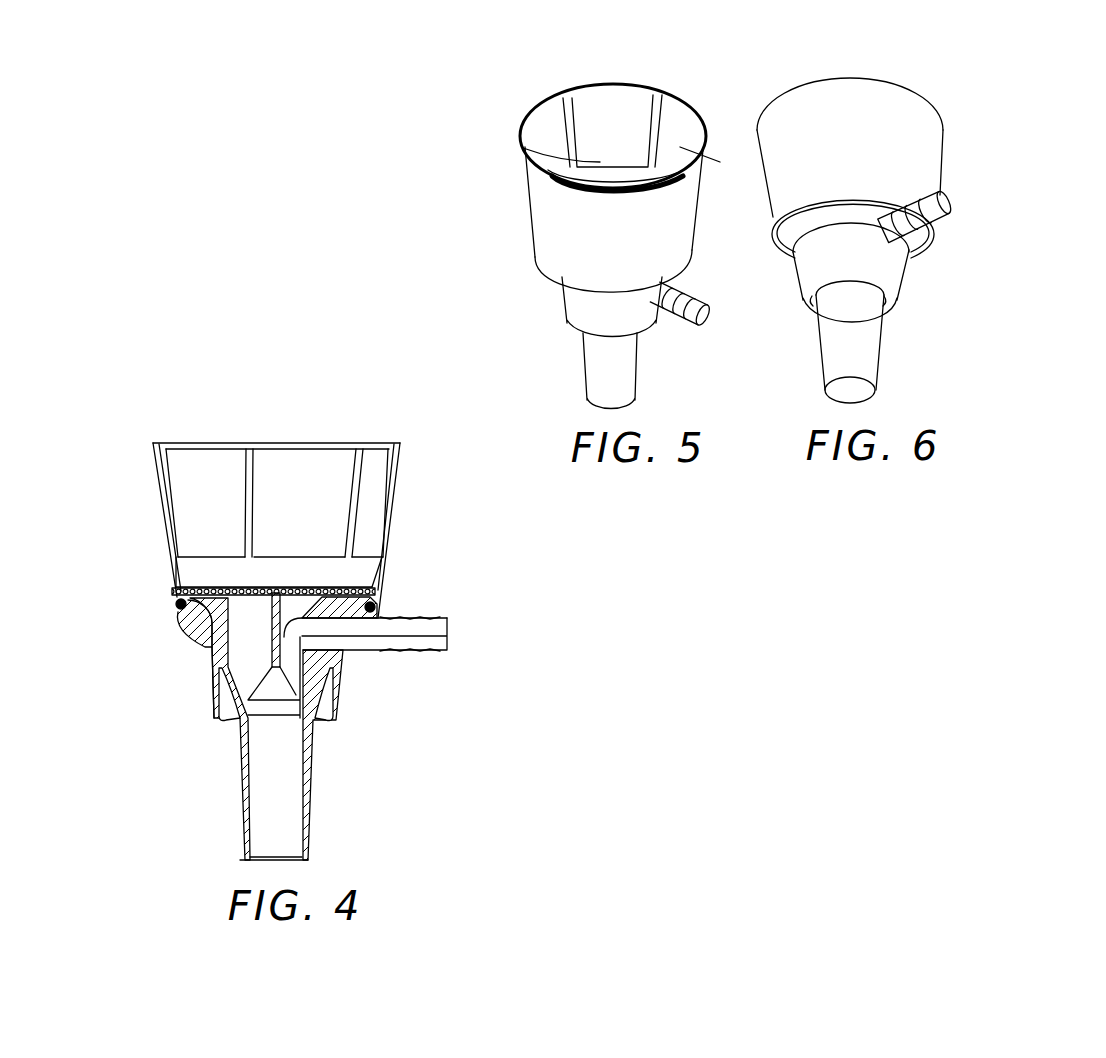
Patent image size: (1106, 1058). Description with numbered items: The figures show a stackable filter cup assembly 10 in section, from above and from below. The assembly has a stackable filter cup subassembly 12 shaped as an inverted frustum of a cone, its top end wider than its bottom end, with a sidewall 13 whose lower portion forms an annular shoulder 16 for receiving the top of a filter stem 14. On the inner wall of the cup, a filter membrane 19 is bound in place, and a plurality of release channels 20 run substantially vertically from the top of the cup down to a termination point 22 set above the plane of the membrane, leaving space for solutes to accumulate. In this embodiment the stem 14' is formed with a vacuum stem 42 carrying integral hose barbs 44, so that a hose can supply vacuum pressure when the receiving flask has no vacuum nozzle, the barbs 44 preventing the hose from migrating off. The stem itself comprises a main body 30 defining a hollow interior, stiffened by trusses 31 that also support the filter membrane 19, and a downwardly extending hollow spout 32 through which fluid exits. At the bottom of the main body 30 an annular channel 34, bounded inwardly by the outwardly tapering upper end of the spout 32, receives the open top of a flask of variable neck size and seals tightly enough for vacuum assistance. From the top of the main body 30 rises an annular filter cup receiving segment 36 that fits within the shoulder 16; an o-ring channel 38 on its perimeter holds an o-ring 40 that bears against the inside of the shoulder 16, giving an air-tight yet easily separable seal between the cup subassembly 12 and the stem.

In FIG. 4, the stackable filter cup assembly 10 is at (417, 387).
In FIG. 5, the stackable filter cup assembly 10 is at (707, 97).
In FIG. 6, the stackable filter cup assembly 10 is at (782, 90).
In FIG. 4, the stackable filter cup subassembly 12 is at (150, 465).
In FIG. 5, the stackable filter cup subassembly 12 is at (530, 213).
In FIG. 6, the stackable filter cup subassembly 12 is at (946, 135).
In FIG. 4, the housing wall 13 is at (397, 493).
In FIG. 5, the housing wall 13 is at (537, 240).
In FIG. 6, the housing wall 13 is at (867, 102).
In FIG. 5, the filter stem 14 is at (547, 367).
In FIG. 4, the lower portion 14' is at (135, 697).
In FIG. 6, the lower portion 14' is at (967, 324).
In FIG. 4, the annular shoulder 16 is at (174, 598).
In FIG. 6, the annular shoulder 16 is at (920, 260).
In FIG. 4, the filter membrane 19 is at (348, 588).
In FIG. 5, the filter membrane 19 is at (643, 177).
In FIG. 4, the release channels 20 is at (355, 482).
In FIG. 5, the release channels 20 is at (657, 123).
In FIG. 4, the termination point 22 is at (203, 552).
In FIG. 5, the termination point 22 is at (522, 146).
In FIG. 4, the main body 30 is at (343, 683).
In FIG. 5, the main body 30 is at (575, 305).
In FIG. 6, the main body 30 is at (813, 260).
In FIG. 4, the trusses 31 is at (237, 752).
In FIG. 4, the spout 32 is at (310, 810).
In FIG. 5, the spout 32 is at (627, 370).
In FIG. 6, the spout 32 is at (833, 340).
In FIG. 4, the annular channel 34 is at (227, 720).
In FIG. 6, the annular channel 34 is at (817, 307).
In FIG. 6, the filter cup receiving segment 36 is at (803, 223).
In FIG. 4, the o-ring channel 38 is at (207, 643).
In FIG. 4, the o-ring 40 is at (377, 602).
In FIG. 4, the vacuum stem 42 is at (443, 637).
In FIG. 5, the vacuum stem 42 is at (707, 315).
In FIG. 6, the vacuum stem 42 is at (950, 192).
In FIG. 4, the hose barbs 44 is at (417, 653).
In FIG. 5, the hose barbs 44 is at (687, 293).
In FIG. 6, the hose barbs 44 is at (940, 217).